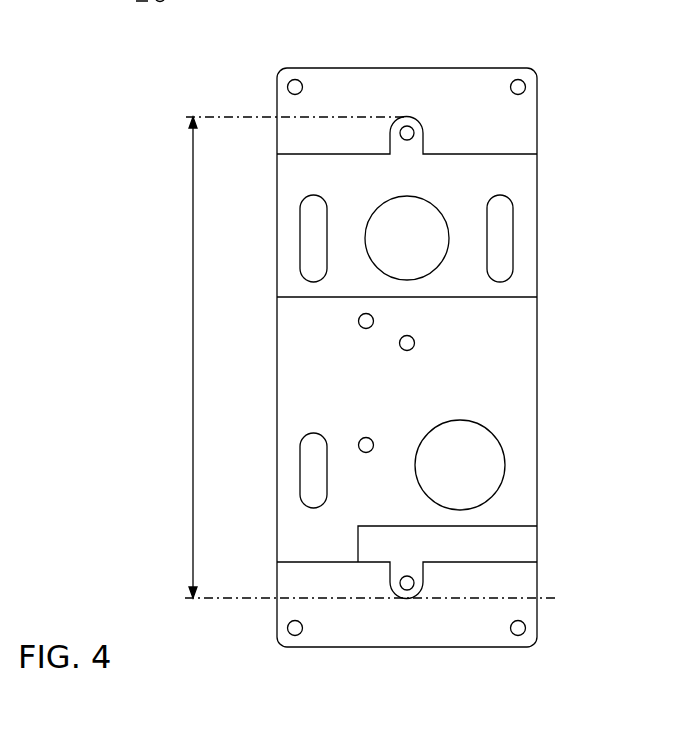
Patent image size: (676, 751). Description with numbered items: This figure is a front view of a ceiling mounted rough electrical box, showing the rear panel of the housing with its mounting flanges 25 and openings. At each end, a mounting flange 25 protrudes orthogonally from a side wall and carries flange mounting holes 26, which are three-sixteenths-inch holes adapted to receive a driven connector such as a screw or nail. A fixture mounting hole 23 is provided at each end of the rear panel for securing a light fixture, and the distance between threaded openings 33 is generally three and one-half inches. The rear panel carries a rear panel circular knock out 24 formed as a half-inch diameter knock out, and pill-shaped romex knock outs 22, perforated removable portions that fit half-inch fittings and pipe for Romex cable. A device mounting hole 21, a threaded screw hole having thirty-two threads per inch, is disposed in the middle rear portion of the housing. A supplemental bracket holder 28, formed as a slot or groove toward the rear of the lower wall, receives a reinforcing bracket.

The device mounting hole 21 is at (415, 345).
The romex knock out 22 is at (313, 238).
The fixture mounting hole 23 is at (407, 117).
The rear panel circular knock out 24 is at (383, 218).
The mounting flange 25 is at (523, 113).
The flange mounting holes 26 is at (293, 80).
The supplemental bracket holder 28 is at (495, 545).
The distance between threaded openings 33 is at (193, 205).